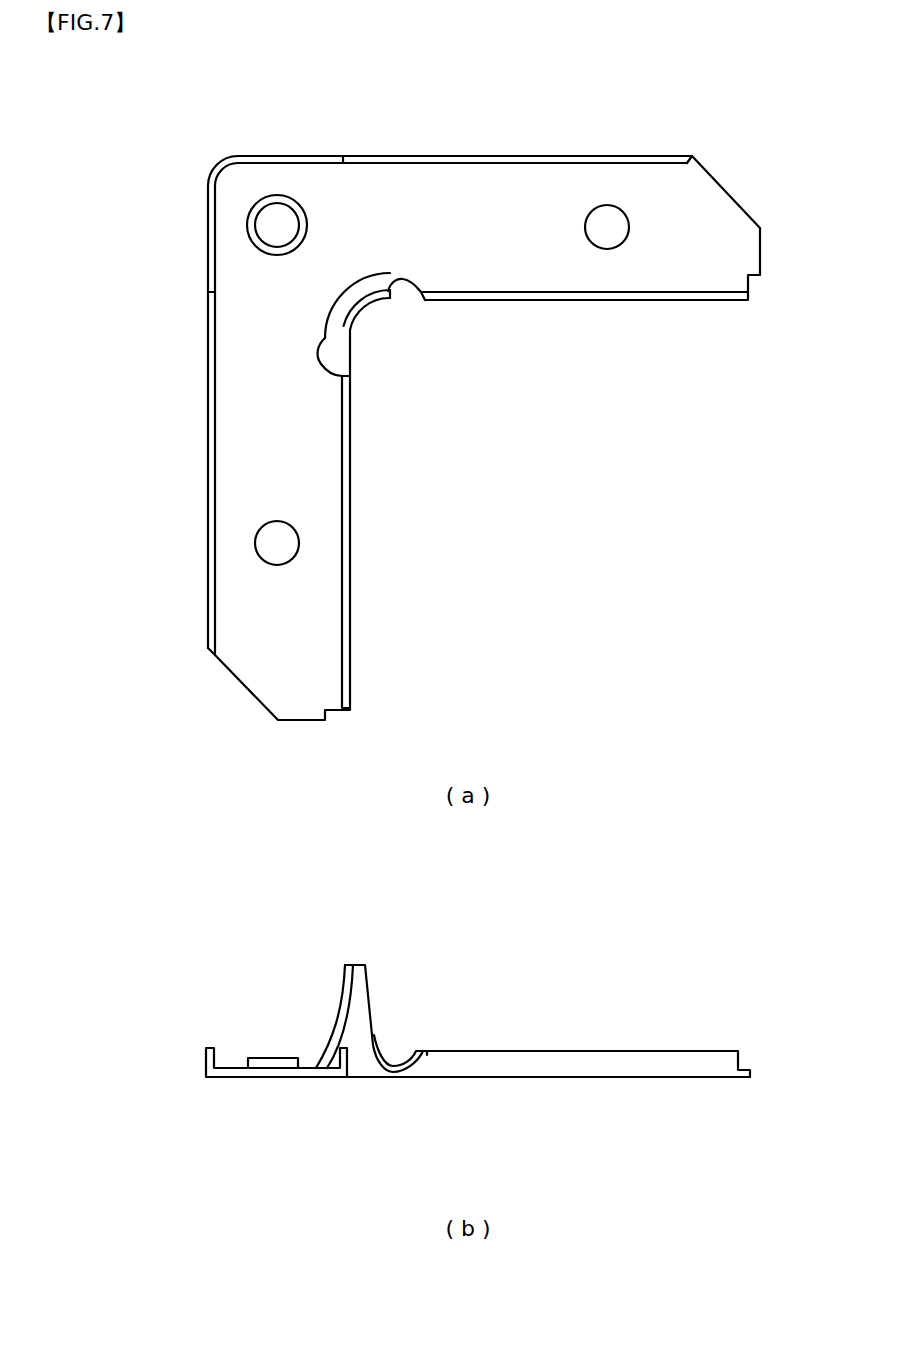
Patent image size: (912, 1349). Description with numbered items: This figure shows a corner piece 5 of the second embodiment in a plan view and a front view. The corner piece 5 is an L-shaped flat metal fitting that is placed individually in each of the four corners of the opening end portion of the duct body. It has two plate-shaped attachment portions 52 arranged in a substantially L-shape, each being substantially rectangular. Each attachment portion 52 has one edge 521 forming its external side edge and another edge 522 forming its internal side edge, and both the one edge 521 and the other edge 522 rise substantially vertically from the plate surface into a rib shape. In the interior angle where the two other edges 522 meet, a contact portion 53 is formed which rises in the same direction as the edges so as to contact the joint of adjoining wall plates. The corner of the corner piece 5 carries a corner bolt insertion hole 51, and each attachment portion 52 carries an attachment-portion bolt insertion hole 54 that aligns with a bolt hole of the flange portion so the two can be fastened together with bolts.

The corner piece 5 is at (180, 158).
The corner bolt insertion hole 51 is at (297, 210).
The attachment portion 52 is at (483, 212).
The one edge 521 is at (573, 155).
The other edge 522 is at (640, 300).
The contact portion 53 is at (367, 300).
The attachment-portion bolt insertion hole 54 is at (626, 218).